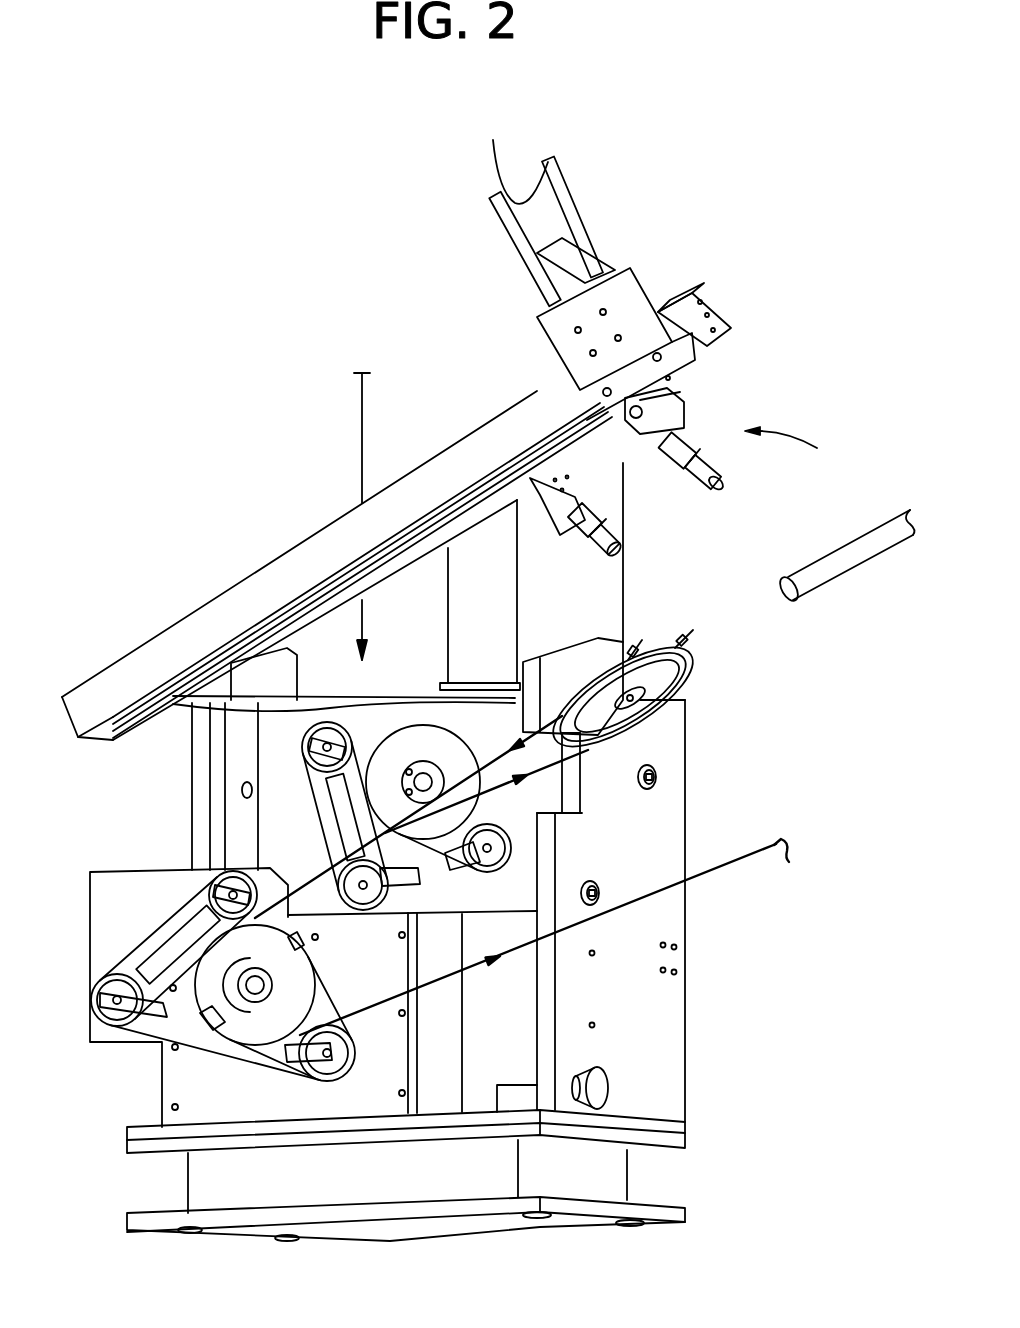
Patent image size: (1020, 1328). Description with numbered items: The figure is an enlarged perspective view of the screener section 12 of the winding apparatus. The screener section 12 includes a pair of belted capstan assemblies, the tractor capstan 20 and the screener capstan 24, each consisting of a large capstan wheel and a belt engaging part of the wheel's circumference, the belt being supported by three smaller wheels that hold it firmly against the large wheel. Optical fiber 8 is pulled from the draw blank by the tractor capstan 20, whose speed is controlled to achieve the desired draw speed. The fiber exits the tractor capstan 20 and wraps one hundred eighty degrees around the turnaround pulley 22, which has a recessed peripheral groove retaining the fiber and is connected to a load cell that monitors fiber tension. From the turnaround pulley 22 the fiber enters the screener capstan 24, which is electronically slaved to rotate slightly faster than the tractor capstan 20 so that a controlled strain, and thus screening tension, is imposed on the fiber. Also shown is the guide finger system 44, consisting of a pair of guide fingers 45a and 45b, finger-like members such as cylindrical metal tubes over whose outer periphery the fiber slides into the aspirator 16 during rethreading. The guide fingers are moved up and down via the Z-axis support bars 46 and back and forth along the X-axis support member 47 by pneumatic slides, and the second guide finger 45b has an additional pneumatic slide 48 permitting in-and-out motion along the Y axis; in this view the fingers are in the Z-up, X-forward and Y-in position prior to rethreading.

The optical fiber 8 is at (362, 435).
The screener section 12 is at (136, 542).
The aspirator 16 is at (838, 565).
The tractor capstan 20 is at (386, 775).
The turnaround pulley 22 is at (683, 706).
The screener capstan 24 is at (207, 993).
The guide finger system 44 is at (798, 445).
The first guide finger 45a is at (577, 507).
The second guide finger 45b is at (695, 425).
The Z-axis support bars 46 is at (494, 150).
The X-axis support member 47 is at (469, 450).
The pneumatic slide 48 is at (665, 410).